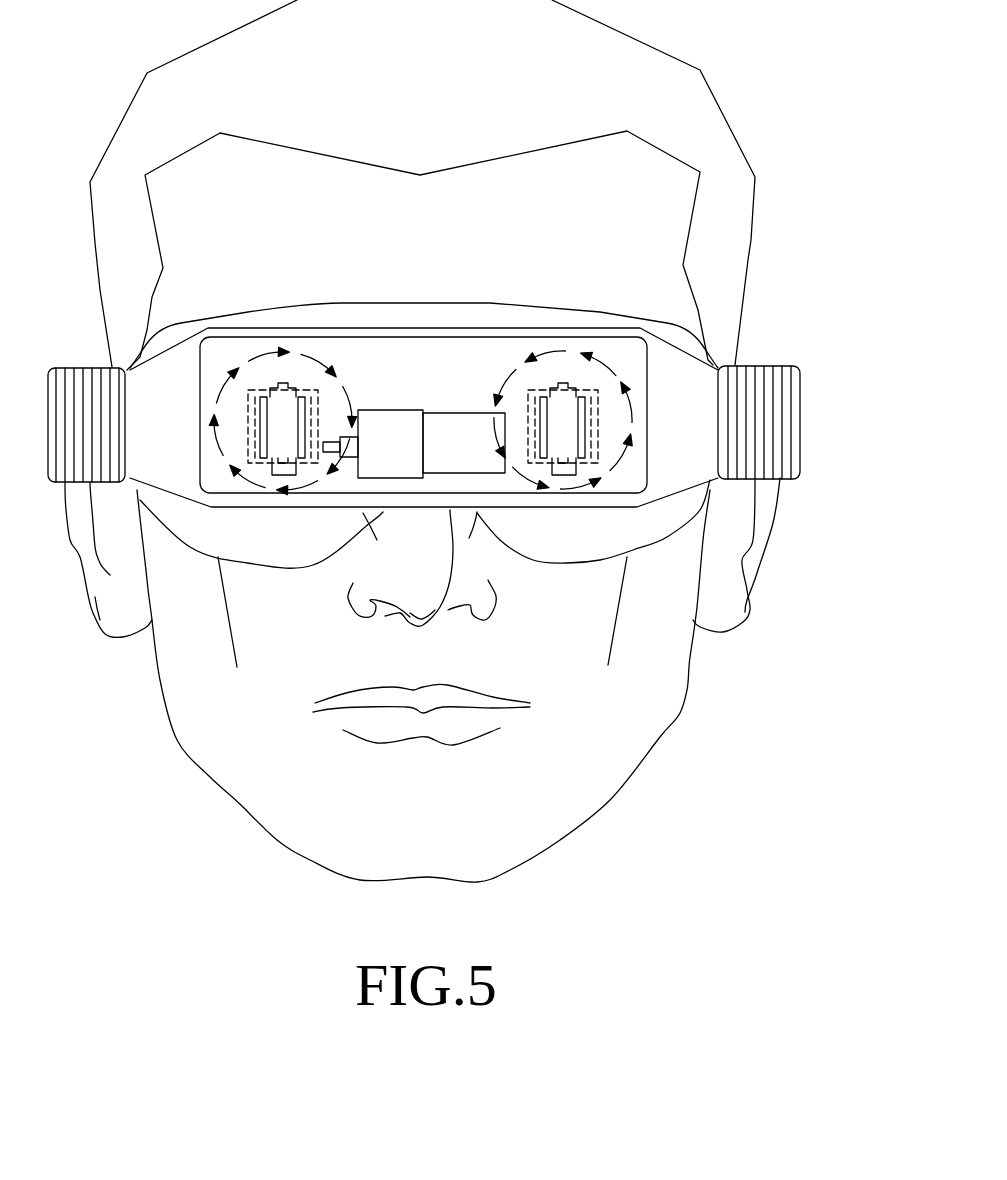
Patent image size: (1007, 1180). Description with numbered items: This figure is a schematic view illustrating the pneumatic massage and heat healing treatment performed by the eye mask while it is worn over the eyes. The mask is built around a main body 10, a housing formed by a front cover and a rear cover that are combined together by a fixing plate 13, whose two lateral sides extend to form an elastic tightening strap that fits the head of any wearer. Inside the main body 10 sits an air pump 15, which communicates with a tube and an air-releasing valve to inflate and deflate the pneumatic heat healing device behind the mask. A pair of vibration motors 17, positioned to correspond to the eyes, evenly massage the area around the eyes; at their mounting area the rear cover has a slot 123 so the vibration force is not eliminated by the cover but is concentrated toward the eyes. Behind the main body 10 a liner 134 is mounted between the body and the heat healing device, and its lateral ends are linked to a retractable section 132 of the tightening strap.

The main body 10 is at (488, 352).
The fixing plate 13 is at (672, 463).
The air pump 15 is at (392, 408).
The vibration motor 17 is at (573, 442).
The slot 123 is at (528, 462).
The retractable section 132 is at (773, 365).
The liner 134 is at (637, 517).